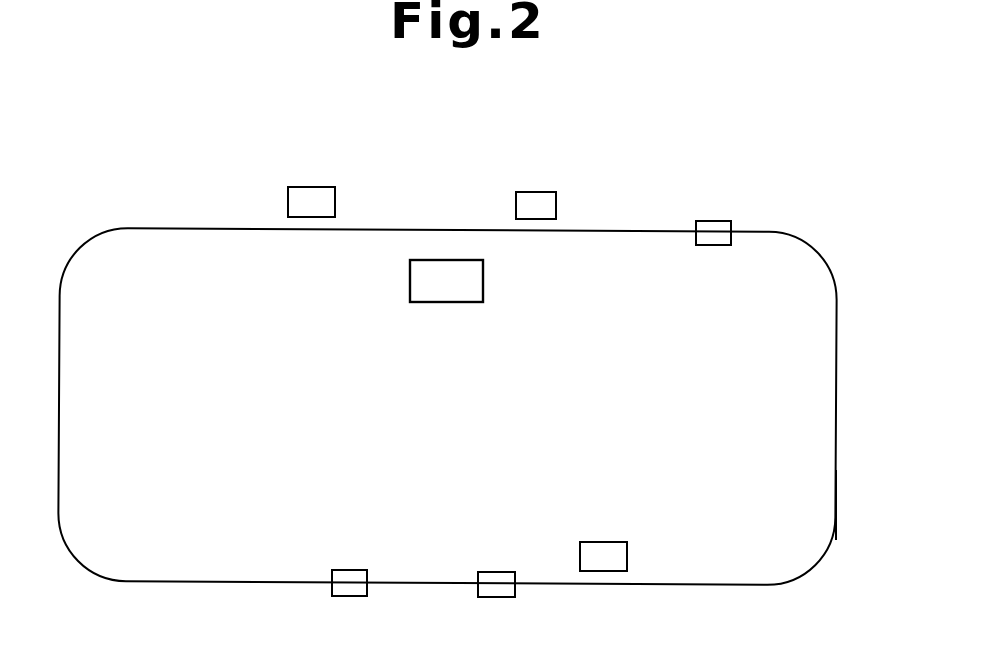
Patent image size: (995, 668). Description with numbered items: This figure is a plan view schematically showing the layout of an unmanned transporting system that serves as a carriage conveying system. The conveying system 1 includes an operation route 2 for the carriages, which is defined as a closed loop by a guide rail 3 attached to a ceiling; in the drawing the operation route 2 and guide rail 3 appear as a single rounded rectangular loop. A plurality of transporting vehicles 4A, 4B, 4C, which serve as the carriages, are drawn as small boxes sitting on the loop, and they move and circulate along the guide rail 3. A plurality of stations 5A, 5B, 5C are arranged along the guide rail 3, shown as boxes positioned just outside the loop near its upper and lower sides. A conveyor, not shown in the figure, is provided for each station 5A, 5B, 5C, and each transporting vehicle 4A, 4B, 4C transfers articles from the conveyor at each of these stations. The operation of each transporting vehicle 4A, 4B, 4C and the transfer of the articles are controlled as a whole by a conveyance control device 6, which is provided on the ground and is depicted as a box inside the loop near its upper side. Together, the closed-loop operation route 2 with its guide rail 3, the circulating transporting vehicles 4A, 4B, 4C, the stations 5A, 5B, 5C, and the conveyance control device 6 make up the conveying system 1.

The conveying system 1 is at (792, 167).
The operation route 2 is at (839, 385).
The guide rail 3 is at (836, 503).
The transporting vehicle 4A is at (714, 222).
The transporting vehicle 4B is at (495, 573).
The transporting vehicle 4C is at (348, 572).
The station 5A is at (538, 195).
The station 5B is at (310, 191).
The station 5C is at (603, 545).
The conveyance control device 6 is at (483, 282).